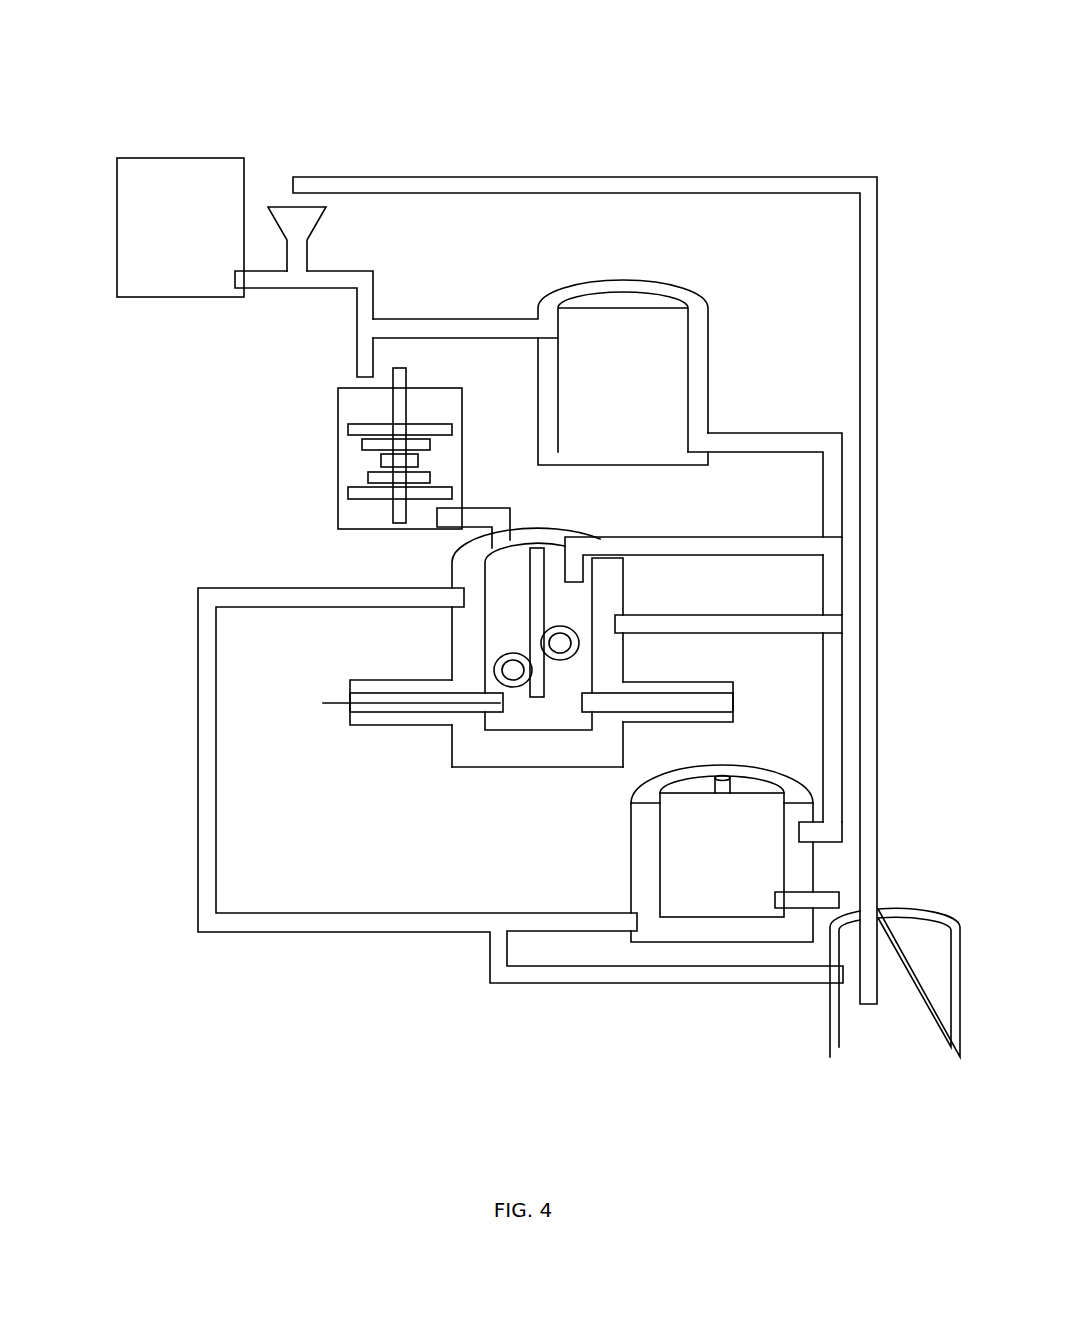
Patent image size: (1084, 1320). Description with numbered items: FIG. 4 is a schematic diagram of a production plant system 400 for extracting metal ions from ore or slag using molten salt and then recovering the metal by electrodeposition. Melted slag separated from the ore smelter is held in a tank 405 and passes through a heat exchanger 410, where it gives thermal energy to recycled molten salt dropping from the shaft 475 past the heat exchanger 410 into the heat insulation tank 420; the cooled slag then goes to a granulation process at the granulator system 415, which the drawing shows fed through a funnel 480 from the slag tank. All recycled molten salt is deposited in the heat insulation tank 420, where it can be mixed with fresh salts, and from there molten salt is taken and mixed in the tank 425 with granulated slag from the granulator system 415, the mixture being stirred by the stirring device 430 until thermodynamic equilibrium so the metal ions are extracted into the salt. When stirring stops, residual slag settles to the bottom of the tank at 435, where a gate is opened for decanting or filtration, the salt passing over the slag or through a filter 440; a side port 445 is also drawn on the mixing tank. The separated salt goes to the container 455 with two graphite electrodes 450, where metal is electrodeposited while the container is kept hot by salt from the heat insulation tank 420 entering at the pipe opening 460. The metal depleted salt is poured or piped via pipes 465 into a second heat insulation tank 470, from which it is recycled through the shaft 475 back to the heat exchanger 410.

The production plant system 400 is at (490, 120).
The tank 405 is at (138, 270).
The heat exchanger 410 is at (293, 280).
The granulator system 415 is at (332, 458).
The heat insulation tank 420 is at (660, 385).
The tank 425 is at (490, 630).
The stirring device 430 is at (538, 608).
The bottom of the tank 435 is at (503, 693).
The filter 440 is at (590, 712).
The side port 445 is at (623, 635).
The graphite electrodes 450 is at (708, 880).
The container 455 is at (637, 851).
The pipe opening 460 is at (812, 840).
The pipes 465 is at (530, 920).
The second heat insulation tank 470 is at (877, 1030).
The shaft 475 is at (308, 185).
The hopper/funnel 480 is at (310, 222).